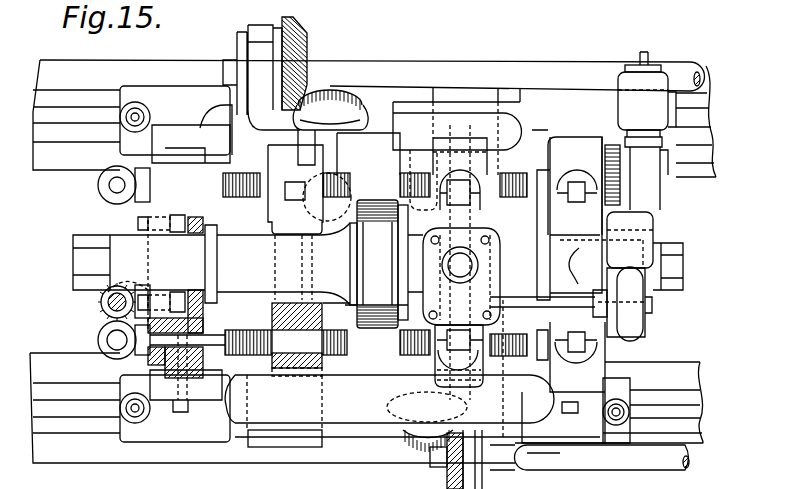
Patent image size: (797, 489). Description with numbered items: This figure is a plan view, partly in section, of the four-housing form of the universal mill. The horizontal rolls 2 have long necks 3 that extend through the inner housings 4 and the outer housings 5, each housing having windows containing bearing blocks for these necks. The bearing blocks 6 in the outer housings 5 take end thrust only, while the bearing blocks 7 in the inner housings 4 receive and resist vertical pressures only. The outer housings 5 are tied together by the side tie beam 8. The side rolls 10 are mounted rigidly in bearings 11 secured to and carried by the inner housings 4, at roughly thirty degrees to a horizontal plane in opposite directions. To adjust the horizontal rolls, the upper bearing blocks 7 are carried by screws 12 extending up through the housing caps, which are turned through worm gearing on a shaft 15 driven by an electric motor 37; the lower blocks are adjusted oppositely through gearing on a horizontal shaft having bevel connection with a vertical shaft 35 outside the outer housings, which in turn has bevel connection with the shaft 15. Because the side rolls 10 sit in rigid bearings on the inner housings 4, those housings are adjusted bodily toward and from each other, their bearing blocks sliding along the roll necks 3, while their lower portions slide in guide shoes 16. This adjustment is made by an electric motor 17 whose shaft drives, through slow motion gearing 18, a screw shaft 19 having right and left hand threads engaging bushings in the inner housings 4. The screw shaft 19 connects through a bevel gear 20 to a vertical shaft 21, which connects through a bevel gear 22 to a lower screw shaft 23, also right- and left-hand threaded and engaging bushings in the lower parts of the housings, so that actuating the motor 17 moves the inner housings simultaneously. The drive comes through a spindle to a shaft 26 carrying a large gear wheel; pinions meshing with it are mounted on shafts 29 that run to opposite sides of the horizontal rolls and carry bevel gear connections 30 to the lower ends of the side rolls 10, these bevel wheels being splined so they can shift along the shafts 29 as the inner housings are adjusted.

The horizontal roll 2 is at (379, 264).
The long neck 3 is at (355, 283).
The inner housing 4 is at (370, 263).
The outer housing 5 is at (152, 213).
The bearing block 6 is at (193, 238).
The bearing block 7 is at (275, 215).
The side tie beam 8 is at (455, 108).
The side roll 10 is at (420, 228).
The bearing 11 is at (338, 157).
The screw 12 is at (460, 272).
The shaft 15 is at (538, 302).
The guide shoe 16 is at (705, 136).
The electric motor 17 is at (647, 131).
The slow motion gearing 18 is at (605, 163).
The screw shaft 19 is at (382, 264).
The bevel gear 20 is at (142, 168).
The vertical shaft 21 is at (108, 185).
The bevel gear 22 is at (138, 362).
The screw shaft 23 is at (273, 339).
The shaft 26 is at (617, 462).
The shaft 29 is at (530, 70).
The bevel gear connection 30 is at (303, 52).
The vertical shaft 35 is at (105, 303).
The electric motor 37 is at (653, 227).